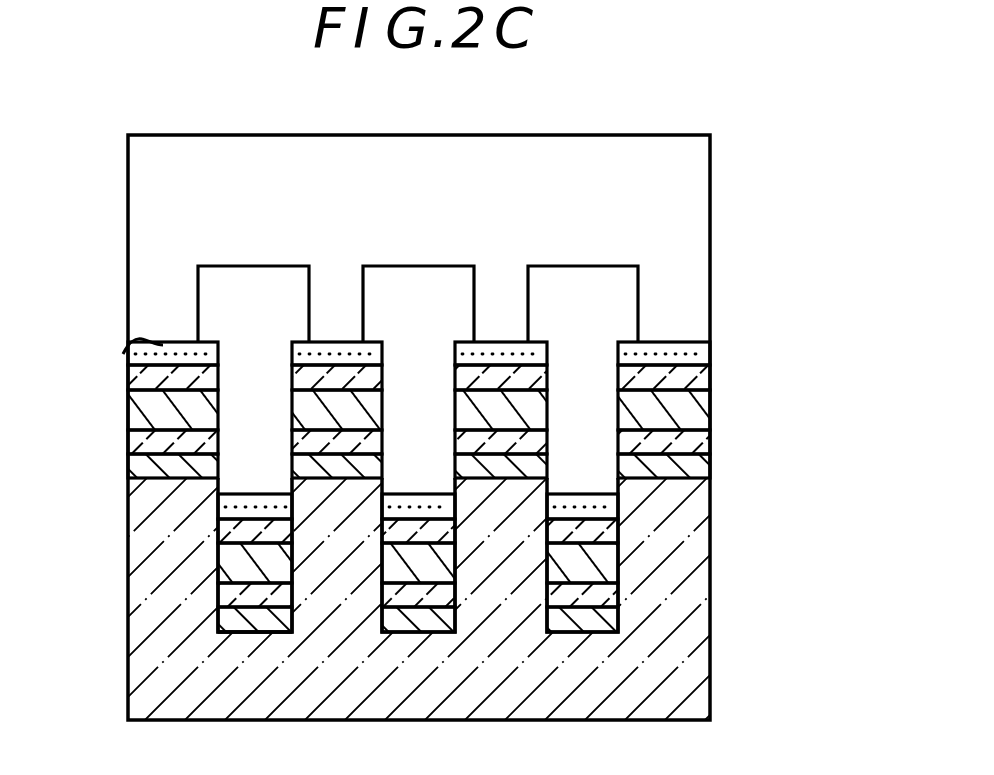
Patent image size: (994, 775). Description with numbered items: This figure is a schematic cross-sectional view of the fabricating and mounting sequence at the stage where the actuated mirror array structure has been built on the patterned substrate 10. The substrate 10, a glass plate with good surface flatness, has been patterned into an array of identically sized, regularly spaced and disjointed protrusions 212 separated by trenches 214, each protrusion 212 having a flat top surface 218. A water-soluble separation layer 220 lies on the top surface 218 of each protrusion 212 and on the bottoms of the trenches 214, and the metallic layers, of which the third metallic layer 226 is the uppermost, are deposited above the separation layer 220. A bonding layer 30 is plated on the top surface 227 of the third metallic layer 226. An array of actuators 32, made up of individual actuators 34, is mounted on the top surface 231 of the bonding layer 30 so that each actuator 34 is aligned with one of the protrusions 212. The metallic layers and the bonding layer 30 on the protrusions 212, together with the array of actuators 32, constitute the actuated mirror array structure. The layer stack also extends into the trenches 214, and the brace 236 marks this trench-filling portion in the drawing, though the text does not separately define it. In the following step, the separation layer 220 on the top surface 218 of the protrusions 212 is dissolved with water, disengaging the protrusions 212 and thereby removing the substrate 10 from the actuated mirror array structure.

The substrate 10 is at (653, 662).
The array of actuators 32 is at (115, 142).
The actuator 34 is at (498, 275).
The bonding layer 30 is at (711, 348).
The top surface of the third metallic layer 227 is at (711, 366).
The third metallic layer 226 is at (692, 408).
The separation layer 220 is at (690, 438).
The top surface of the protrusion 218 is at (693, 469).
The protrusion 212 is at (663, 557).
The trench fill stack 236 is at (110, 540).
The trench 214 is at (240, 633).
The top surface of the bonding layer 231 is at (123, 354).